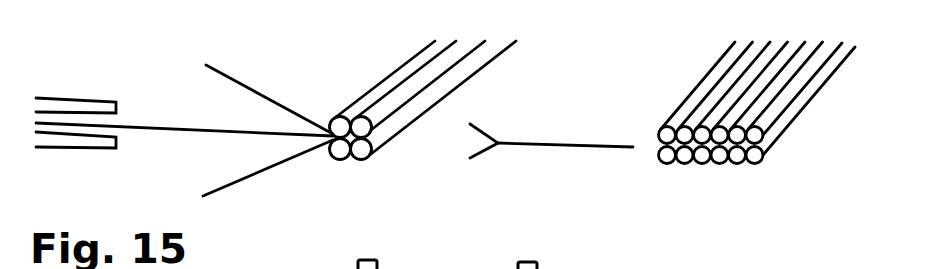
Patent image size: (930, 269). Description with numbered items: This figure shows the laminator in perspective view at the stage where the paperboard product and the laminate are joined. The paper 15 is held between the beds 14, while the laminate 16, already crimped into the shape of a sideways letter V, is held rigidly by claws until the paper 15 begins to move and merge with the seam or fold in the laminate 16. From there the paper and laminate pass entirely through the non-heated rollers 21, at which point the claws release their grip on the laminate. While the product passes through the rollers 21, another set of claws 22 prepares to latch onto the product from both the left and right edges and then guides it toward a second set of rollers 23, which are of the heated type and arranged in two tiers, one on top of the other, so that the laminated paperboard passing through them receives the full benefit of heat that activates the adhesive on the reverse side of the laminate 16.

The beds 14 is at (76, 124).
The paper 15 is at (184, 118).
The laminate 16 is at (268, 132).
The rollers 21 is at (423, 98).
The claws 22 is at (551, 136).
The heated rollers 23 is at (757, 103).